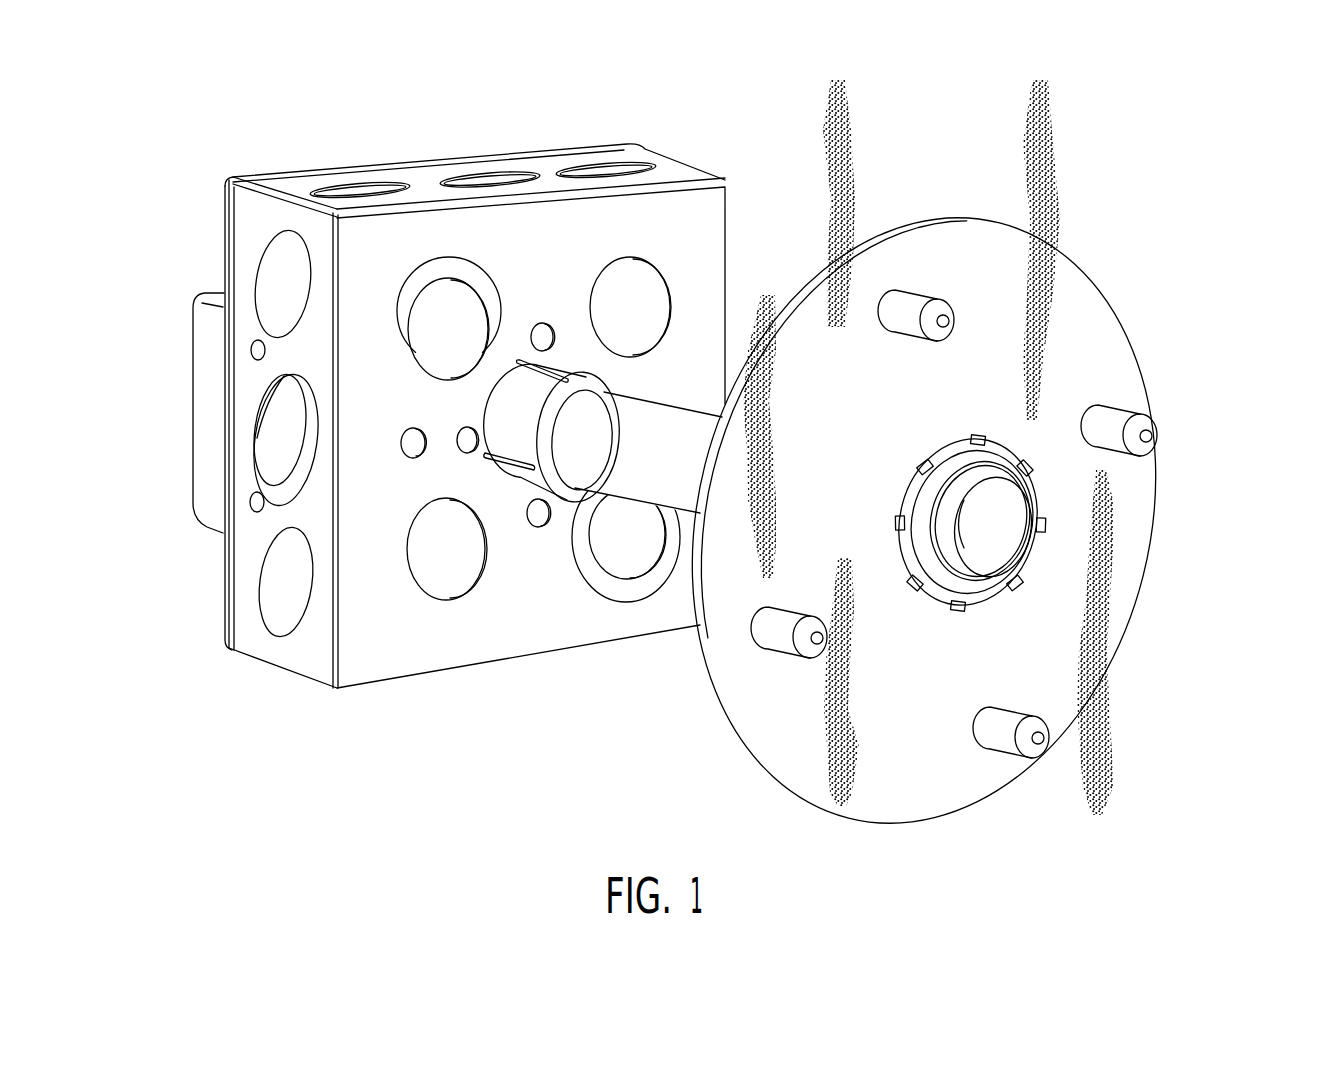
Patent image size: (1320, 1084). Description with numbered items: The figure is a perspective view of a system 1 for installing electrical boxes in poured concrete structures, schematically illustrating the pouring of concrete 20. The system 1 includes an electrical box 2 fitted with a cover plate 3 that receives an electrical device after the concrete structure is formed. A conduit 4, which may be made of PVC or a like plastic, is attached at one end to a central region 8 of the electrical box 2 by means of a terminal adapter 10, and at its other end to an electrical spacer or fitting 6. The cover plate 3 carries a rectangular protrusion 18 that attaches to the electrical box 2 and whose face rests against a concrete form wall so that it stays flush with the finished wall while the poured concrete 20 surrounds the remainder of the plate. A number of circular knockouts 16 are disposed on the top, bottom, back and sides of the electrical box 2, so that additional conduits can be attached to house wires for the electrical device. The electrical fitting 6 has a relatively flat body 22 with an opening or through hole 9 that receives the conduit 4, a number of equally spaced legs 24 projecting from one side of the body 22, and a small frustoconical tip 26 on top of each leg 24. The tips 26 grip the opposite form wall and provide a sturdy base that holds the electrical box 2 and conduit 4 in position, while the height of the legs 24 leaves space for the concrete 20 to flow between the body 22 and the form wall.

The system for installing electrical boxes 1 is at (757, 172).
The electrical box 2 is at (428, 180).
The cover plate 3 is at (218, 573).
The conduit 4 is at (670, 420).
The electrical spacer or fitting 6 is at (1207, 408).
The central region 8 is at (483, 456).
The opening or through hole 9 is at (962, 525).
The terminal adapter 10 is at (515, 478).
The circular knockouts 16 is at (940, 573).
The rectangular protrusion 18 is at (205, 388).
The poured concrete 20 is at (1043, 145).
The body 22 is at (778, 748).
The legs 24 is at (900, 323).
The tip 26 is at (943, 305).